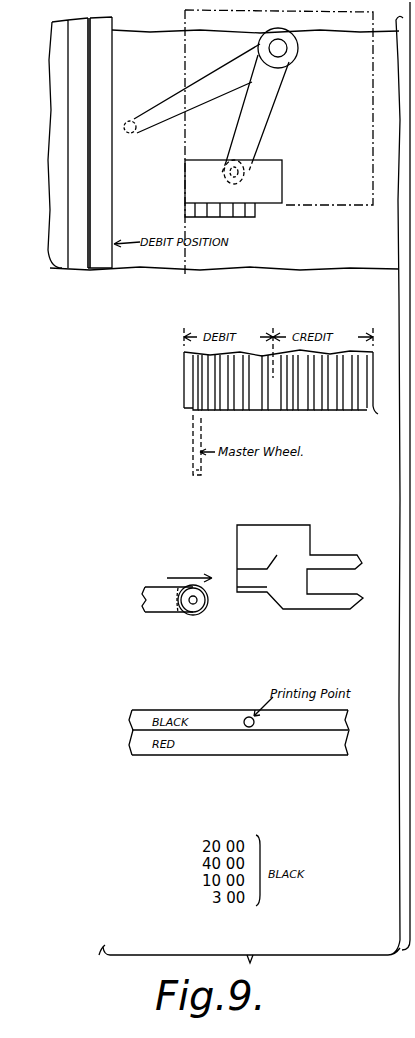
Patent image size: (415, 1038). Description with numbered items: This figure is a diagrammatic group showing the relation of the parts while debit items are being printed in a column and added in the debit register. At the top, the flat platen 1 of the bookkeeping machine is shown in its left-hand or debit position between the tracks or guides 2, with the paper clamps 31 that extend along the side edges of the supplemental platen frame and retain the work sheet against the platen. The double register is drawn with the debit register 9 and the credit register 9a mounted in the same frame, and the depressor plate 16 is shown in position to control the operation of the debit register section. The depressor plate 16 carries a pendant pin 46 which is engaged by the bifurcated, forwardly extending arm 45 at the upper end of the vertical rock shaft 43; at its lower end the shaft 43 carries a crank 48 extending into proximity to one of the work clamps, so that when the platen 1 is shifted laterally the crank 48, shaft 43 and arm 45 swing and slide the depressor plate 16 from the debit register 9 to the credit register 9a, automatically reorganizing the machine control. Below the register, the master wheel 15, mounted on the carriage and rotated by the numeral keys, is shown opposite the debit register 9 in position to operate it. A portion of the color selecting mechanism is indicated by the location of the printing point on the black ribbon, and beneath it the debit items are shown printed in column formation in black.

The flat platen 1 is at (158, 262).
The tracks or guides 2 is at (80, 171).
The debit register 9 is at (185, 53).
The credit register 9a is at (373, 78).
The master wheel 15 is at (192, 466).
The depressor plate 16 is at (185, 182).
The paper clamps 31 is at (100, 209).
The vertical rock shaft 43 is at (280, 48).
The forwardly extending arm 45 is at (262, 113).
The pin 46 is at (245, 173).
The crank 48 is at (127, 121).